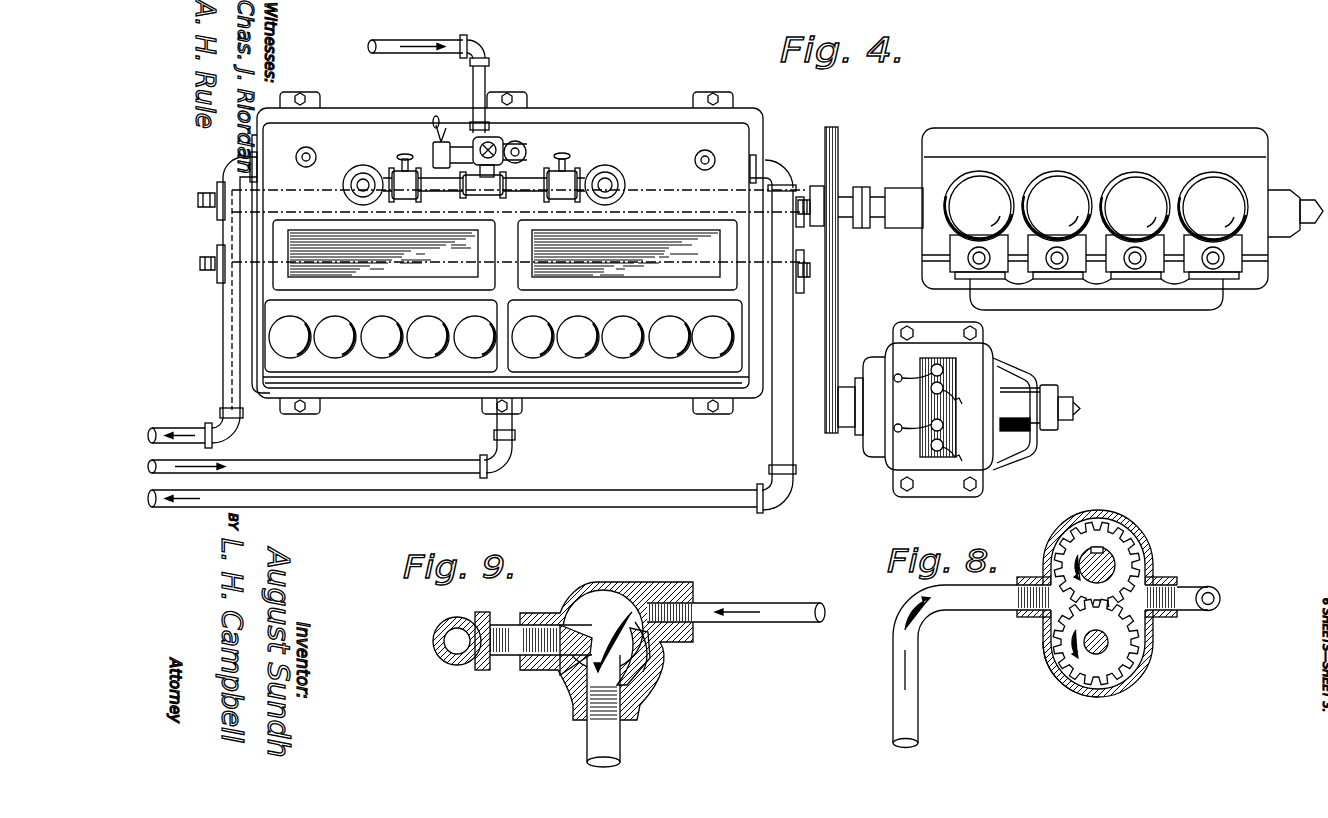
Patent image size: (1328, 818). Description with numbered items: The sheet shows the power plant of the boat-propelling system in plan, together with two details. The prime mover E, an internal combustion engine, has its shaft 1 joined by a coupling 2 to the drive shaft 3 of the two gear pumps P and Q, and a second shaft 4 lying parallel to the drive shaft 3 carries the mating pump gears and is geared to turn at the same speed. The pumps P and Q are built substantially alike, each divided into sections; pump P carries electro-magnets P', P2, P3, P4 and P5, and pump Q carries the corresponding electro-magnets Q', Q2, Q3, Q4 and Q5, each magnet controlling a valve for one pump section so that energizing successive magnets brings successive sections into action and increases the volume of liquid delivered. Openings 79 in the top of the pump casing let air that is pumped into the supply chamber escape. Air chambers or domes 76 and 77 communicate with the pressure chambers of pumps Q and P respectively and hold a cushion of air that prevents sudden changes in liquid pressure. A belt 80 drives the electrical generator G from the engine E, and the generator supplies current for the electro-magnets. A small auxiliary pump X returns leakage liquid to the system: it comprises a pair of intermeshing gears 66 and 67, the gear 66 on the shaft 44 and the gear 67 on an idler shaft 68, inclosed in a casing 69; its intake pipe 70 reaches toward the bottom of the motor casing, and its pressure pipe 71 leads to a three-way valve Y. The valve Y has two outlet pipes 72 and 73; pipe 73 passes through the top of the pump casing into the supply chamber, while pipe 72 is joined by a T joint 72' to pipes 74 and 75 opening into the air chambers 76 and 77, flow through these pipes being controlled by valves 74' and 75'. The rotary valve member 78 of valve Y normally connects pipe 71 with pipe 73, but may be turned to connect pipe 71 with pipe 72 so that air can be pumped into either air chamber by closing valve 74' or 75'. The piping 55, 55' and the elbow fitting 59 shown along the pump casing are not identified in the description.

In FIG. 4, the shaft of the engine 1 is at (878, 197).
In FIG. 4, the coupling 2 is at (858, 187).
In FIG. 4, the drive shaft of the pumps 3 is at (200, 197).
In FIG. 4, the shaft 4 is at (200, 263).
In FIG. 8, the shaft 44 is at (1122, 560).
In FIG. 4, the return pipe 55 is at (484, 322).
In FIG. 4, the return pipe branch 55' is at (202, 300).
In FIG. 4, the pipe elbow 59 is at (517, 465).
In FIG. 8, the gear 66 is at (1125, 560).
In FIG. 8, the gear 67 is at (1118, 650).
In FIG. 8, the gear shaft 68 is at (1102, 647).
In FIG. 8, the casing 69 is at (1053, 677).
In FIG. 8, the intake pipe 70 is at (985, 595).
In FIG. 4, the pipe 71 is at (443, 50).
In FIG. 9, the pipe 71 is at (797, 615).
In FIG. 8, the pipe 71 is at (1216, 602).
In FIG. 4, the outlet pipe 72 is at (495, 180).
In FIG. 9, the outlet pipe 72 is at (512, 659).
In FIG. 4, the T joint 72' is at (484, 204).
In FIG. 4, the outlet pipe 73 is at (526, 154).
In FIG. 9, the outlet pipe 73 is at (605, 740).
In FIG. 4, the pipe 74 is at (441, 142).
In FIG. 4, the valve 74' is at (398, 169).
In FIG. 4, the pipe 75 is at (609, 173).
In FIG. 4, the valve 75' is at (574, 171).
In FIG. 4, the air chamber 76 is at (362, 166).
In FIG. 4, the air chamber 77 is at (622, 183).
In FIG. 9, the rotary valve member 78 is at (637, 657).
In FIG. 4, the openings 79 is at (300, 151).
In FIG. 4, the belt 80 is at (840, 297).
In FIG. 4, the prime mover E is at (1098, 175).
In FIG. 4, the generator G is at (965, 378).
In FIG. 4, the pump P is at (625, 224).
In FIG. 4, the electro-magnet P' is at (533, 384).
In FIG. 4, the electro-magnet P2 is at (582, 343).
In FIG. 4, the electro-magnet P3 is at (627, 340).
In FIG. 4, the electro-magnet P4 is at (670, 340).
In FIG. 4, the electro-magnet P5 is at (710, 343).
In FIG. 4, the pump Q is at (381, 224).
In FIG. 4, the cylinder Q' is at (285, 384).
In FIG. 4, the cylinder Q2 is at (336, 345).
In FIG. 4, the cylinder Q3 is at (383, 345).
In FIG. 4, the cylinder Q4 is at (430, 345).
In FIG. 4, the cylinder Q5 is at (476, 345).
In FIG. 8, the auxiliary pump X is at (1097, 603).
In FIG. 4, the three-way valve Y is at (490, 143).
In FIG. 9, the three-way valve Y is at (597, 583).